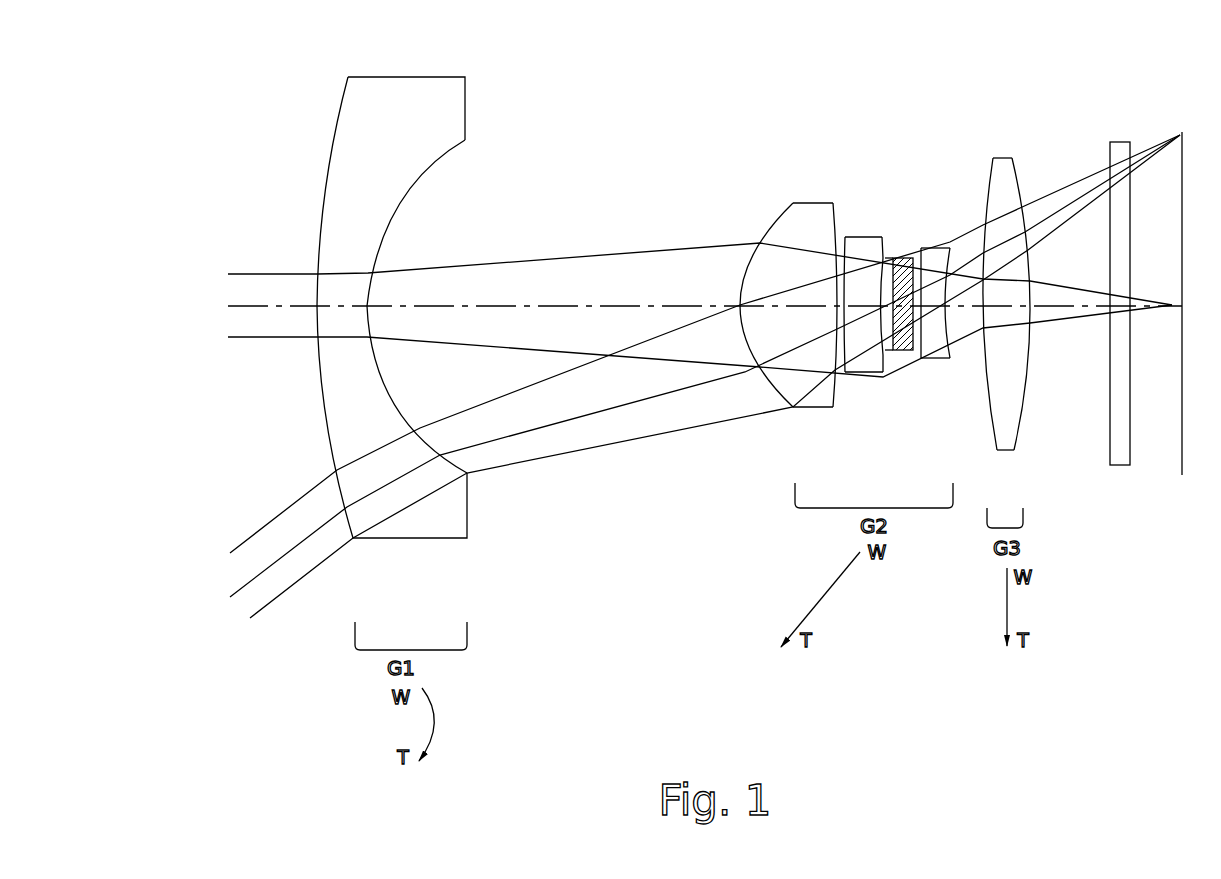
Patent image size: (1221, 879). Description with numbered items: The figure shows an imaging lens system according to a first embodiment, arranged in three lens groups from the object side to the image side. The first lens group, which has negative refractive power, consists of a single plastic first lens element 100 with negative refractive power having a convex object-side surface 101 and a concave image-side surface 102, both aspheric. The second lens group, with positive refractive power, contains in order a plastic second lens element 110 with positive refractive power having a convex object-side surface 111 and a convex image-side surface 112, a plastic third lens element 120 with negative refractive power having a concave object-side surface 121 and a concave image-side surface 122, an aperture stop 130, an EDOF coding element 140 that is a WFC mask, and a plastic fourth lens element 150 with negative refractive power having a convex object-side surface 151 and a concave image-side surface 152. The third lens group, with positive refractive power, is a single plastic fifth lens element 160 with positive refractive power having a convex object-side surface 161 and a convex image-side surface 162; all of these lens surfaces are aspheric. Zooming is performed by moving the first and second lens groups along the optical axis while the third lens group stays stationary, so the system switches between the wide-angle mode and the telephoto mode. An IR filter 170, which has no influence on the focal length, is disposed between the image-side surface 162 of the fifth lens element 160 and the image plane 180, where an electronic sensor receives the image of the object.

The first lens element 100 is at (418, 319).
The object-side surface 101 is at (327, 430).
The image-side surface 102 is at (397, 385).
The second lens element 110 is at (817, 369).
The object-side surface 111 is at (763, 390).
The image-side surface 112 is at (830, 318).
The third lens element 120 is at (859, 356).
The object-side surface 121 is at (850, 318).
The image-side surface 122 is at (932, 543).
The aperture stop 130 is at (887, 256).
The EDOF coding element 140 is at (905, 259).
The fourth lens element 150 is at (949, 295).
The object-side surface 151 is at (917, 362).
The image-side surface 152 is at (957, 363).
The fifth lens element 160 is at (1032, 296).
The object-side surface 161 is at (988, 417).
The image-side surface 162 is at (1024, 434).
The IR filter 170 is at (1118, 151).
The image plane 180 is at (1177, 165).